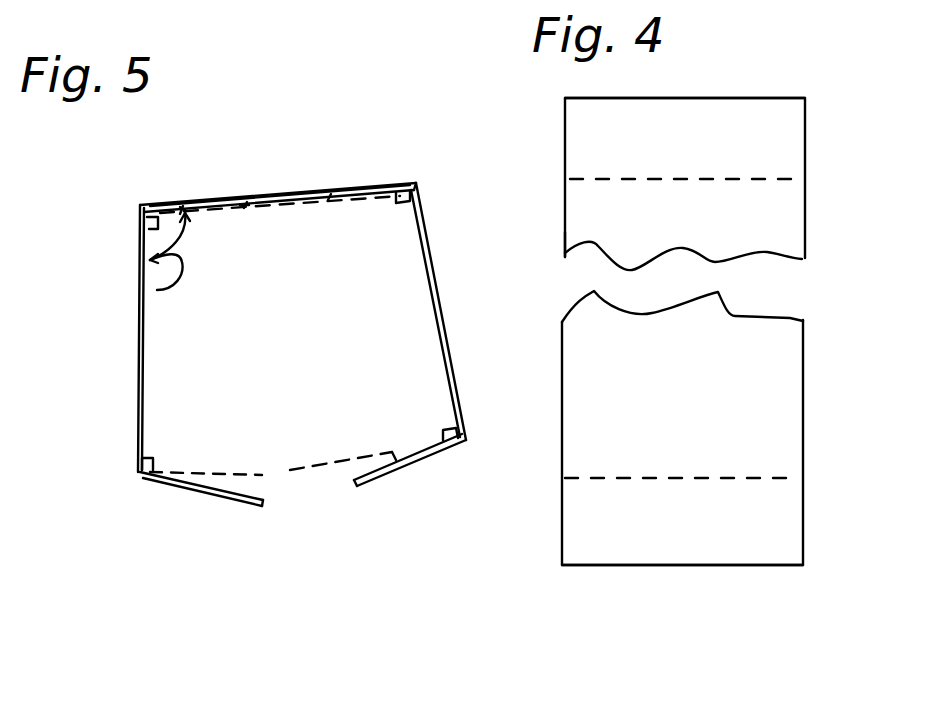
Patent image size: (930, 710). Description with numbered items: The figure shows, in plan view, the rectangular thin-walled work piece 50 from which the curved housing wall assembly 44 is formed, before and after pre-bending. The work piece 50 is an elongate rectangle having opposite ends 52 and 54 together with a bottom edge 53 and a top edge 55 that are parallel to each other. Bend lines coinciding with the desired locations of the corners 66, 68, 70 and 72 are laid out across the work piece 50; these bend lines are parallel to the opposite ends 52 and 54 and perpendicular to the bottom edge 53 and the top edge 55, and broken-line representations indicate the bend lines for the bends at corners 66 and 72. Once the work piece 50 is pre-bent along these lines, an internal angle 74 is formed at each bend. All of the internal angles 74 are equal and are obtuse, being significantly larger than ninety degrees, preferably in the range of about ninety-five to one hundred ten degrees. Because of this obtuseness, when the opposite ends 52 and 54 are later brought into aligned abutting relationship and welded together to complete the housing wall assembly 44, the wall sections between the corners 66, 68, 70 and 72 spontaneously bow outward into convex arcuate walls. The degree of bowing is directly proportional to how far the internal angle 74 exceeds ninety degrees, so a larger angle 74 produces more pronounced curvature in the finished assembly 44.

In FIG. 5, the housing wall assembly 44 is at (320, 349).
In FIG. 5, the work piece 50 is at (270, 192).
In FIG. 4, the work piece 50 is at (703, 231).
In FIG. 5, the end 52 is at (355, 488).
In FIG. 4, the end 52 is at (679, 97).
In FIG. 4, the bottom edge 53 is at (565, 235).
In FIG. 5, the end 54 is at (263, 503).
In FIG. 4, the end 54 is at (690, 566).
In FIG. 4, the top edge 55 is at (802, 405).
In FIG. 5, the corner 66 is at (138, 472).
In FIG. 4, the corner 66 is at (600, 478).
In FIG. 5, the corner 68 is at (140, 205).
In FIG. 5, the corner 70 is at (418, 186).
In FIG. 5, the corner 72 is at (468, 440).
In FIG. 4, the corner 72 is at (592, 178).
In FIG. 5, the internal angle 74 is at (157, 290).